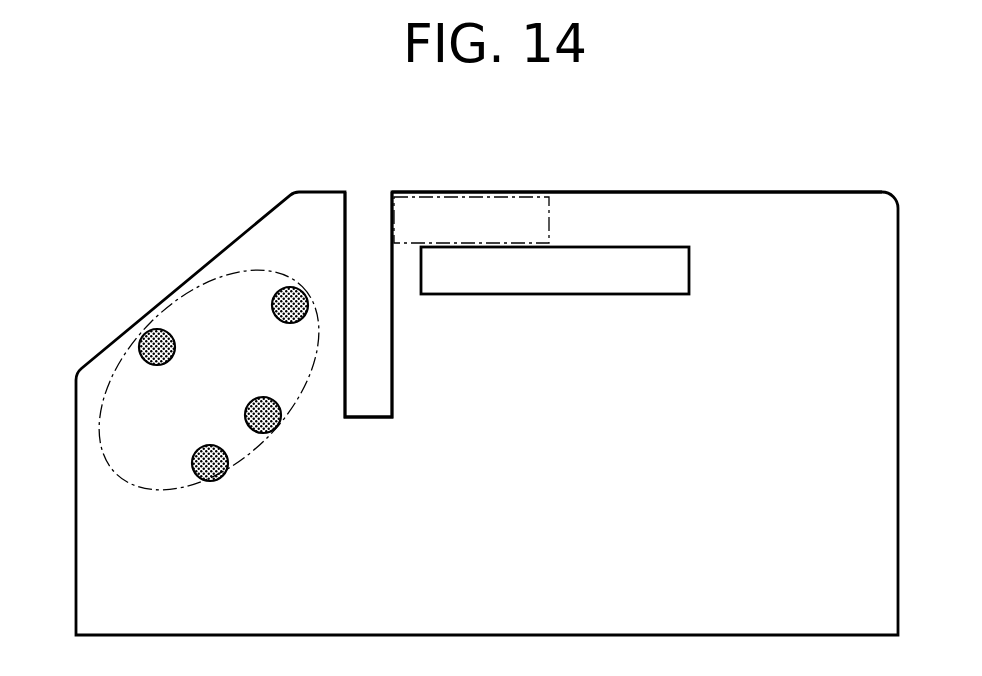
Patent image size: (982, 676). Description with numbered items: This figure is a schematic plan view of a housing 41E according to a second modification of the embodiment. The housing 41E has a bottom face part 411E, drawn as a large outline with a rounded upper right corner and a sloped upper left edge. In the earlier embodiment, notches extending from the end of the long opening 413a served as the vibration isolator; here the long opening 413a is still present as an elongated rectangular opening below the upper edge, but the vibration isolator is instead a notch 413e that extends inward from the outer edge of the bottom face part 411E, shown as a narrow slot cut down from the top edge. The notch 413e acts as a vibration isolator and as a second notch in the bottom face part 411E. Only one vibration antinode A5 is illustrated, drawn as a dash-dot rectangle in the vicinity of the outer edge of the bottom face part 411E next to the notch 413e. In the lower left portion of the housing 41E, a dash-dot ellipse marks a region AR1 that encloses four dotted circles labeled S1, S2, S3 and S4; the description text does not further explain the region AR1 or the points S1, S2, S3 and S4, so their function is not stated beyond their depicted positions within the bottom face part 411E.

The housing 41E is at (815, 165).
The bottom face part 411E is at (603, 218).
The notch 413e is at (368, 200).
The long opening 413a is at (661, 247).
The vibration antinode A5 is at (548, 197).
The region AR1 is at (113, 380).
The welding point S1 is at (147, 343).
The welding point S2 is at (200, 468).
The welding point S3 is at (260, 398).
The welding point S4 is at (278, 288).